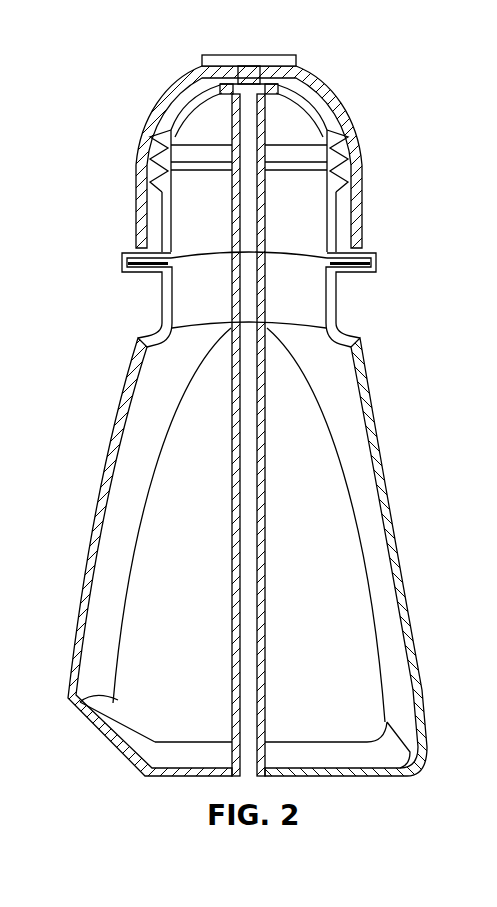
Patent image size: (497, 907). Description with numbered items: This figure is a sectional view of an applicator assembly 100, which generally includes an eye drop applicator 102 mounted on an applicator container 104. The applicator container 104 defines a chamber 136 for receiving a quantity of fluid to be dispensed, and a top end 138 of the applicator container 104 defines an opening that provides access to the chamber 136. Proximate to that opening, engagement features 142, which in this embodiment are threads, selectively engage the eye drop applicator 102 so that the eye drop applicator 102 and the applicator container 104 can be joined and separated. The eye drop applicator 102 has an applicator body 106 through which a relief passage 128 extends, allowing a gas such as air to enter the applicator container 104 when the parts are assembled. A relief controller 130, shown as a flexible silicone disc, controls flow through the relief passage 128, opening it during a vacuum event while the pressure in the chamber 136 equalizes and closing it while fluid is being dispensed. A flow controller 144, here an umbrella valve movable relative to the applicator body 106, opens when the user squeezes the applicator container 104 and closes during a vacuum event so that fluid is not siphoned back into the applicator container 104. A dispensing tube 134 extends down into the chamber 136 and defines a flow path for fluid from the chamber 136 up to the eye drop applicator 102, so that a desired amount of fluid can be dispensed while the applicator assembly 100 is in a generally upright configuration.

The applicator assembly 100 is at (106, 181).
The eye drop applicator 102 is at (157, 128).
The applicator container 104 is at (107, 440).
The applicator body 106 is at (350, 180).
The relief passage 128 is at (300, 75).
The relief controller 130 is at (305, 112).
The dispensing tube 134 is at (261, 537).
The chamber 136 is at (353, 375).
The top end 138 is at (343, 130).
The engagement features 142 is at (340, 168).
The flow controller 144 is at (258, 74).